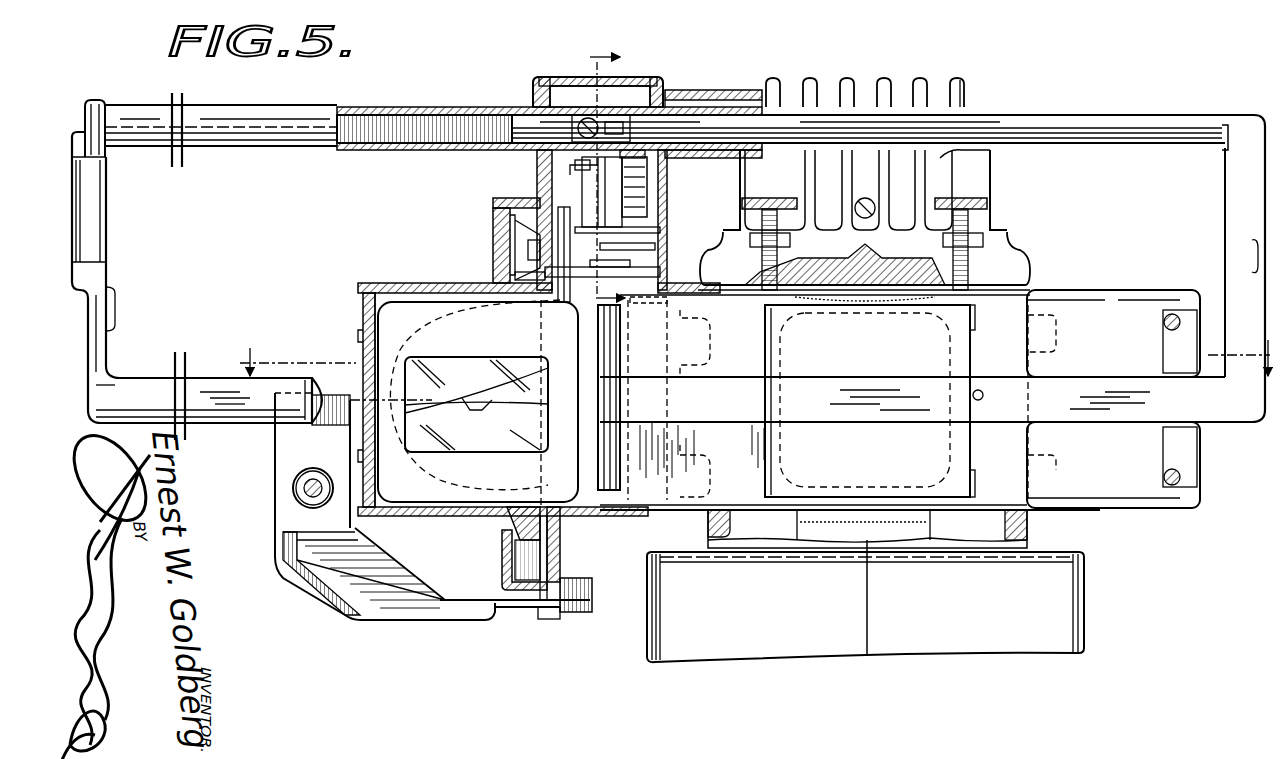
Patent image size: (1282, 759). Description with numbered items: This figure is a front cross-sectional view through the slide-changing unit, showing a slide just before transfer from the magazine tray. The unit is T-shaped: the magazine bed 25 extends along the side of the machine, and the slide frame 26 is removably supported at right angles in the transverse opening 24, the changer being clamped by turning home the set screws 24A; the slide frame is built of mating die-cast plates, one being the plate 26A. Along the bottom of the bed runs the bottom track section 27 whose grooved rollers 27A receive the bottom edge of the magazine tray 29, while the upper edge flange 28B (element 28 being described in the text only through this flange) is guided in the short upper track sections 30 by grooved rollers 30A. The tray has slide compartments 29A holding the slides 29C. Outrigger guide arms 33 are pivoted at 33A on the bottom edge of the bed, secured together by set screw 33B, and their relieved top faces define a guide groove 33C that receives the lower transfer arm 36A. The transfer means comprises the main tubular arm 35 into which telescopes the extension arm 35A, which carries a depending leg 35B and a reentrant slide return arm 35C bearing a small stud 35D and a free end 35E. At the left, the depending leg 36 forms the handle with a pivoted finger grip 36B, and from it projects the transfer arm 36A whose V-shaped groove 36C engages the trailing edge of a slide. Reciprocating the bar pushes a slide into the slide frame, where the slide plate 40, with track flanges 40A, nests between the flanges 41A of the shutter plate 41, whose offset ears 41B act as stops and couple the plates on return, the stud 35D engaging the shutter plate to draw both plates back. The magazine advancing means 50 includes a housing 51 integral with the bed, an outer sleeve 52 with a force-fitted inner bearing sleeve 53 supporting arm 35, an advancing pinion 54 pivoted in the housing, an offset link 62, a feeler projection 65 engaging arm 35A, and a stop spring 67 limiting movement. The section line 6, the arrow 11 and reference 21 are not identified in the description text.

The section line 6 is at (746, 357).
The direction arrow 11 is at (589, 178).
The fin 21 is at (968, 103).
The transverse opening 24 is at (1000, 268).
The set screws 24A is at (975, 200).
The magazine bed 25 is at (585, 515).
The slide frame 26 is at (1090, 290).
The die-cast plate 26A is at (1195, 462).
The bottom track section 27 is at (502, 545).
The grooved rollers 27A is at (515, 560).
The block 28 is at (507, 520).
The upper edge flange 28B is at (505, 268).
The magazine tray 29 is at (395, 283).
The slide compartments 29A is at (375, 360).
The slides 29C is at (476, 382).
The upper short track sections 30 is at (491, 210).
The grooved rollers 30A is at (510, 240).
The outrigger guide arms 33 is at (310, 575).
The pivot 33A is at (548, 618).
The set screw 33B is at (300, 488).
The guide groove 33C is at (337, 415).
The main tubular arm 35 is at (298, 120).
The extension arm 35A is at (512, 125).
The depending leg 35B is at (1222, 210).
The slide return arm 35C is at (1128, 415).
The stud 35D is at (985, 398).
The free end of return arm 35E is at (635, 385).
The depending leg 36 is at (108, 277).
The slide transfer arm 36A is at (252, 410).
The finger grip 36B is at (93, 218).
The V-shaped groove 36C is at (316, 380).
The slide plate 40 is at (820, 345).
The track flanges 40A is at (718, 490).
The shutter plate 41 is at (984, 445).
The flanges 41A is at (915, 318).
The offset ears 41B is at (978, 320).
The magazine advancing means 50 is at (655, 70).
The housing 51 is at (615, 78).
The outer sleeve 52 is at (640, 118).
The inner bearing sleeve 53 is at (795, 90).
The advancing pinion 54 is at (565, 280).
The offset link 62 is at (632, 195).
The feeler projection 65 is at (573, 168).
The stop spring 67 is at (612, 128).